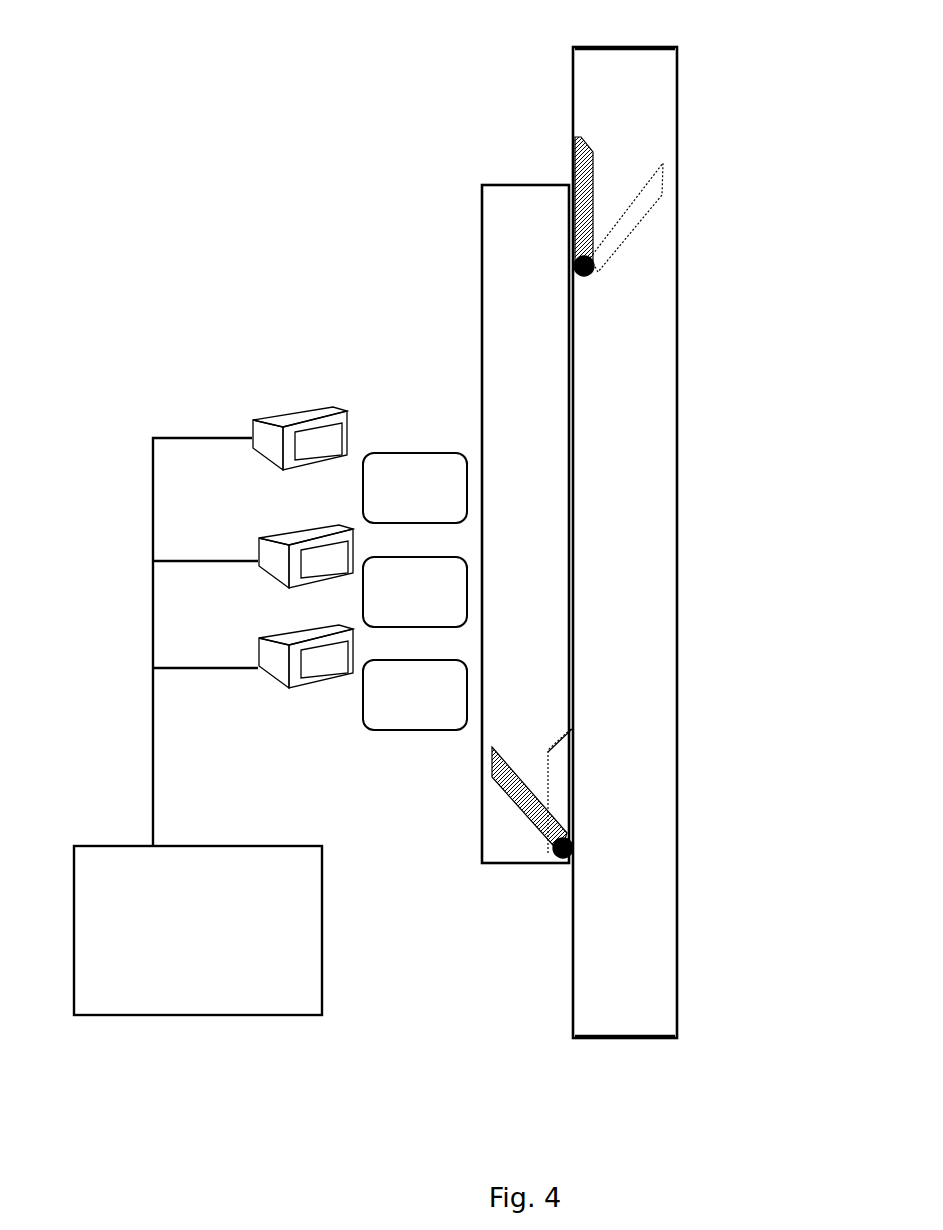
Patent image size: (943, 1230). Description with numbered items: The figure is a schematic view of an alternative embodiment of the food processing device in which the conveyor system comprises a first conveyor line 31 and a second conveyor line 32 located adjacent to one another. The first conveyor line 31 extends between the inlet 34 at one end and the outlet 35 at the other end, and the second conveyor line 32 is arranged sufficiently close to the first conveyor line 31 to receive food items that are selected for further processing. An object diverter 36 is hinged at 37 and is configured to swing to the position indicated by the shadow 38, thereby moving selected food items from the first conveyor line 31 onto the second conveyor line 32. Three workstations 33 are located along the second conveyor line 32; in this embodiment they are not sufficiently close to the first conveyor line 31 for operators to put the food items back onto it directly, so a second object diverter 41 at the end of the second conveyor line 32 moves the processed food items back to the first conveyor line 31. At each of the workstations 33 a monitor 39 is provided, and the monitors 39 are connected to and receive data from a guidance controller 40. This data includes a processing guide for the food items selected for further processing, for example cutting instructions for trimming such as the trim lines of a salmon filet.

The first conveyor line 31 is at (678, 192).
The second conveyor line 32 is at (542, 370).
The workstations 33 is at (399, 514).
The inlet 34 is at (627, 88).
The outlet 35 is at (623, 998).
The object diverter 36 is at (593, 170).
The hinge 37 is at (593, 270).
The shadow 38 is at (610, 227).
The monitors 39 is at (257, 413).
The guidance controller 40 is at (181, 944).
The second object diverter 41 is at (505, 783).